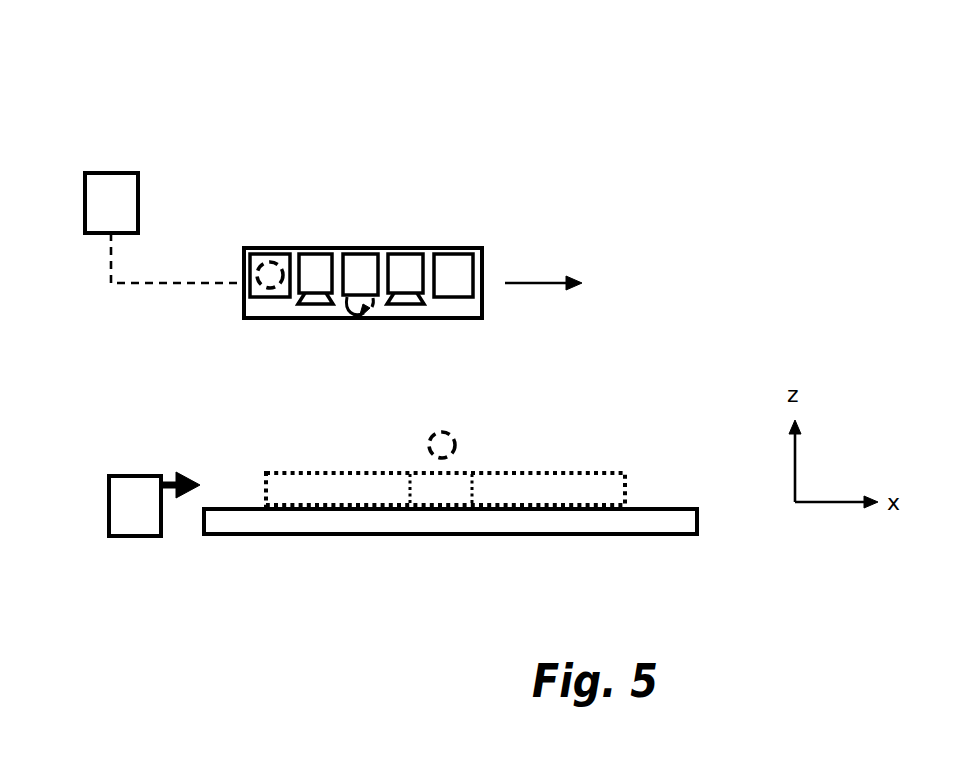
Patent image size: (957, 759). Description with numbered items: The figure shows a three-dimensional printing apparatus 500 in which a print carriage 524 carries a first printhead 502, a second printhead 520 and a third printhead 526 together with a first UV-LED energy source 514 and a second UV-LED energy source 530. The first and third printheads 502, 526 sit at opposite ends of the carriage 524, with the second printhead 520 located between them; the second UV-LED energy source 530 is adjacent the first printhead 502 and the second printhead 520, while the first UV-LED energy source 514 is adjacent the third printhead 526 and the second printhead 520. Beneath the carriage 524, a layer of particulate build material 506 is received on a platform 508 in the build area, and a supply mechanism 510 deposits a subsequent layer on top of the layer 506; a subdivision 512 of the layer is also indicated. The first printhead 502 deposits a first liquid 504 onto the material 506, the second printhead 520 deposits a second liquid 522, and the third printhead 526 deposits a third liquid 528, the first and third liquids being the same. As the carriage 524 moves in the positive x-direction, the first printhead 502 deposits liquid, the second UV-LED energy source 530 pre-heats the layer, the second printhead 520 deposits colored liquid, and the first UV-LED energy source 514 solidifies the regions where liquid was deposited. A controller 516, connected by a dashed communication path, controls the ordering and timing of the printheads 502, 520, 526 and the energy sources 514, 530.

The three-dimensional printing apparatus 500 is at (492, 91).
The first printhead 502 is at (450, 253).
The first liquid 504 is at (453, 436).
The layer of particulate build material 506 is at (610, 471).
The platform 508 is at (312, 538).
The supply mechanism 510 is at (108, 512).
The layer segment 512 is at (464, 471).
The first UV-LED energy source 514 is at (310, 253).
The controller 516 is at (109, 172).
The second printhead 520 is at (362, 253).
The second liquid 522 is at (362, 317).
The carriage 524 is at (278, 320).
The third printhead 526 is at (249, 267).
The third liquid 528 is at (250, 296).
The second UV-LED energy source 530 is at (424, 302).